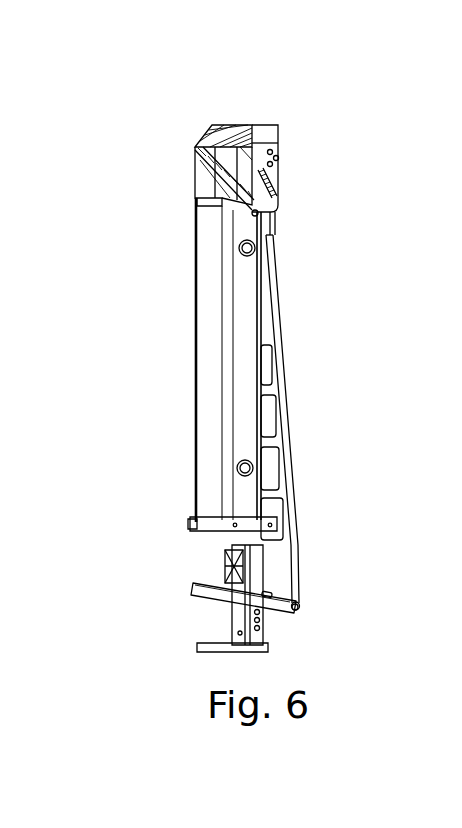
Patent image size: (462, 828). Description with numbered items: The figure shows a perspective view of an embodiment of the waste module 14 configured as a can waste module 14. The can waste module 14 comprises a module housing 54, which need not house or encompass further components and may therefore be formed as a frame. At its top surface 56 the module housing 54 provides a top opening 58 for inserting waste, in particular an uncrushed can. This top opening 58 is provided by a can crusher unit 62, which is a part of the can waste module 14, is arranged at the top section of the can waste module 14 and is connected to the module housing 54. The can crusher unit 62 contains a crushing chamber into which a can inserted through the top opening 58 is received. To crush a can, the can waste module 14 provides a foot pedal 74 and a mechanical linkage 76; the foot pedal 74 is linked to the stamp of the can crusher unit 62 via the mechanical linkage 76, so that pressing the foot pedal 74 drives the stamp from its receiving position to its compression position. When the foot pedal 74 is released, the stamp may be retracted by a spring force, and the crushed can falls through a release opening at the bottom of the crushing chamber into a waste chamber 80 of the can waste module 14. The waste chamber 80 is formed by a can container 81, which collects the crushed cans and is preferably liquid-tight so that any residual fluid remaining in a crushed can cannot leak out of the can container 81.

The can waste module 14 is at (362, 132).
The module housing 54 is at (274, 628).
The top surface 56 is at (239, 110).
The top opening 58 is at (196, 124).
The can crusher unit 62 is at (292, 190).
The foot pedal 74 is at (188, 598).
The mechanical linkage 76 is at (312, 571).
The waste chamber 80 is at (191, 283).
The can container 81 is at (191, 362).